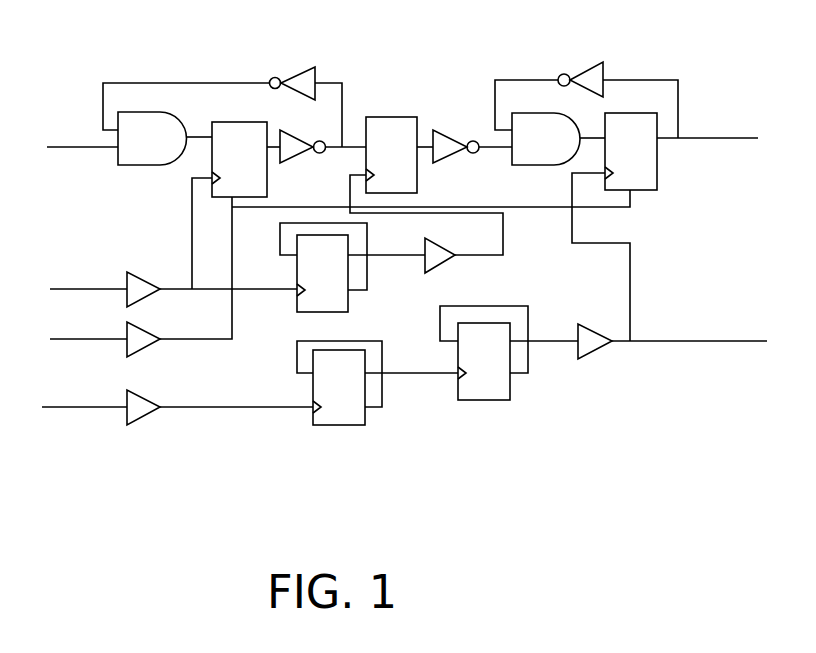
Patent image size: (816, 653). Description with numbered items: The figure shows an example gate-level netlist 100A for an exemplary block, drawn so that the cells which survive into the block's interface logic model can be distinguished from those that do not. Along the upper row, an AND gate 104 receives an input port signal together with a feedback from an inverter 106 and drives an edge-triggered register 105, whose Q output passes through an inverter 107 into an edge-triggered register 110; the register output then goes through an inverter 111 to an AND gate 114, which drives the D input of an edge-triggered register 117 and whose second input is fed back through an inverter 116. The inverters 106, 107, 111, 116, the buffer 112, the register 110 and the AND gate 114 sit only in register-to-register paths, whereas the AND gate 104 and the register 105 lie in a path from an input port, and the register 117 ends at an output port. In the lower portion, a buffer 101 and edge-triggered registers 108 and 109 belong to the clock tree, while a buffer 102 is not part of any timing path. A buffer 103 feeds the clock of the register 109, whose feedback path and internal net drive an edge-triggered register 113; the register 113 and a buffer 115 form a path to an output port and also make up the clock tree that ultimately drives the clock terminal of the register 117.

The gate-level netlist 100A is at (405, 76).
The buffer 101 is at (147, 277).
The buffer 102 is at (157, 348).
The buffer 103 is at (155, 416).
The AND gate 104 is at (152, 138).
The edge-triggered register 105 is at (239, 159).
The inverter 106 is at (293, 71).
The inverter 107 is at (303, 159).
The edge-triggered register 108 is at (322, 273).
The edge-triggered register 109 is at (339, 387).
The edge-triggered register 110 is at (391, 155).
The inverter 111 is at (456, 136).
The buffer 112 is at (451, 248).
The edge-triggered register 113 is at (484, 361).
The AND gate 114 is at (546, 139).
The buffer 115 is at (595, 328).
The inverter 116 is at (580, 68).
The edge-triggered register 117 is at (631, 151).